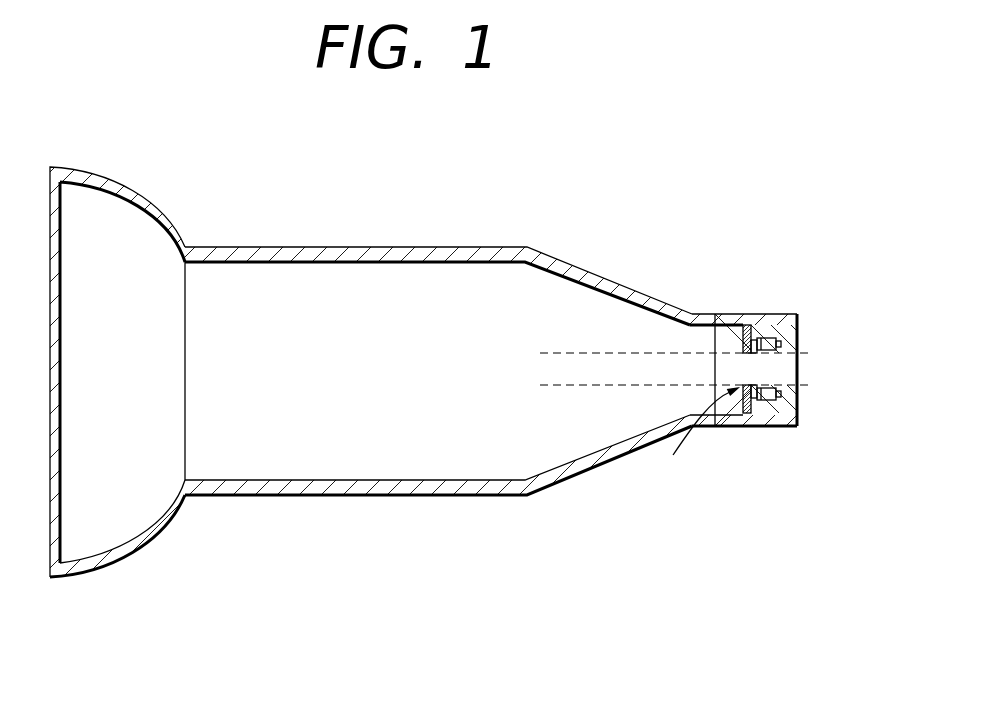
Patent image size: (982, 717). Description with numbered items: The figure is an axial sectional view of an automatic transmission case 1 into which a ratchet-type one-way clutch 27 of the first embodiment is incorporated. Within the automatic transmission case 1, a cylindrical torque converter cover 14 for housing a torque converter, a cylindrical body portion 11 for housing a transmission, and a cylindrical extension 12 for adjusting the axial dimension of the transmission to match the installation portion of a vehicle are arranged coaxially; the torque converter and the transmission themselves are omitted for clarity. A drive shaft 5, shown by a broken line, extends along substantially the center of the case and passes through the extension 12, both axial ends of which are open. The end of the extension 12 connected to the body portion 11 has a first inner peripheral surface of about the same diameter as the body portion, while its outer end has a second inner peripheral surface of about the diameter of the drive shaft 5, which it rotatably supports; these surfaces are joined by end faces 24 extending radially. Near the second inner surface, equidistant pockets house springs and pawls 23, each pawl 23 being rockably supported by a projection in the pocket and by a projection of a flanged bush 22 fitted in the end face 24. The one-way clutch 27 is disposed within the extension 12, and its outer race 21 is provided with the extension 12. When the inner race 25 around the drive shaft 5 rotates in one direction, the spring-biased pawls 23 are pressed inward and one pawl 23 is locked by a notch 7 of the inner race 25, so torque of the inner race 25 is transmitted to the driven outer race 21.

The automatic transmission case 1 is at (491, 354).
The torque converter cover 14 is at (92, 171).
The body portion 11 is at (568, 264).
The extension 12 is at (728, 313).
The outer race 21 is at (783, 314).
The pawl 23 is at (789, 341).
The end face 24 is at (753, 322).
The flanged bush 22 is at (745, 399).
The inner race 25 is at (763, 399).
The notch 7 is at (799, 362).
The drive shaft 5 is at (810, 385).
The one-way clutch 27 is at (689, 432).